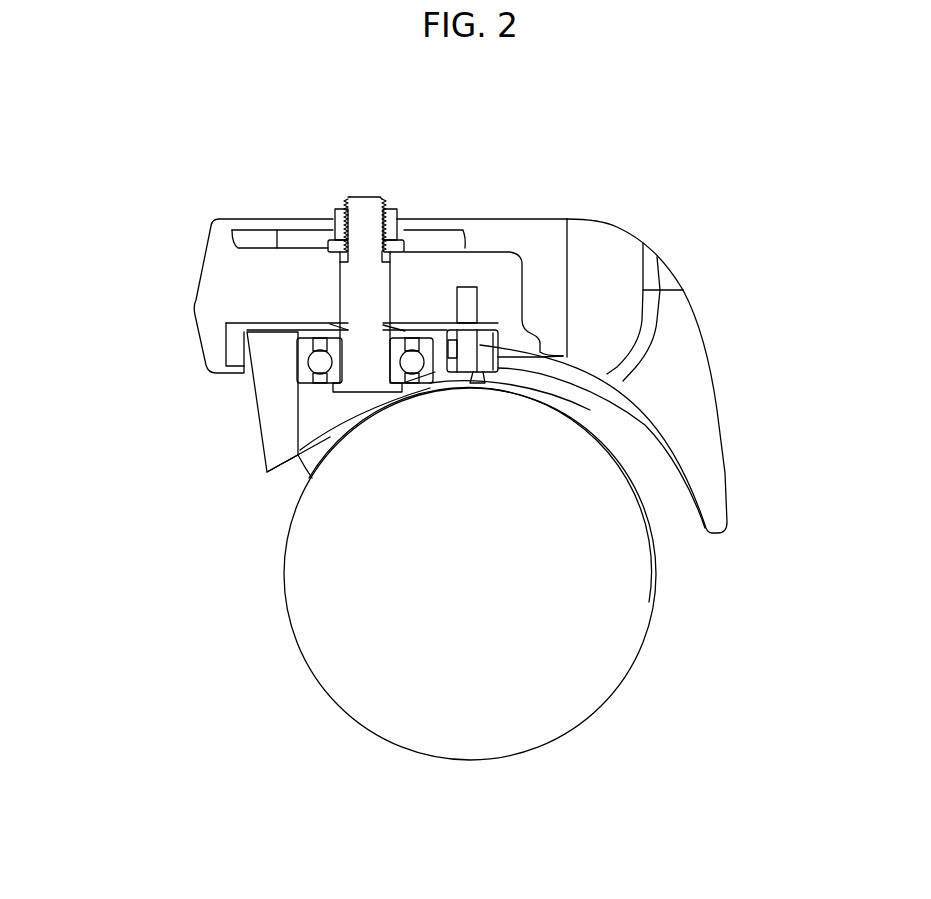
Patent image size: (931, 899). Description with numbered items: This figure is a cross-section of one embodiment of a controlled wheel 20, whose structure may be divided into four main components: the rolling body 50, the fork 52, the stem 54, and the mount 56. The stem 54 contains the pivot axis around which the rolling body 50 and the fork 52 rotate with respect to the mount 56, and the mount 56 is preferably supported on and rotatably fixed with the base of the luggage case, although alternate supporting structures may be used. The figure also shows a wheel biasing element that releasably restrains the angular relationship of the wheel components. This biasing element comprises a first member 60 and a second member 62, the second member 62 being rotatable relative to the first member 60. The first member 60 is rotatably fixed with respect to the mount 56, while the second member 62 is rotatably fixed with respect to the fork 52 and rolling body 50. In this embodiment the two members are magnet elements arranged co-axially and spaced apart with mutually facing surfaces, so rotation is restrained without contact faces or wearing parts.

The wheel 20 is at (720, 154).
The rolling body 50 is at (538, 662).
The fork 52 is at (265, 400).
The stem 54 is at (363, 215).
The mount 56 is at (222, 278).
The first member 60 is at (467, 313).
The second member 62 is at (468, 347).